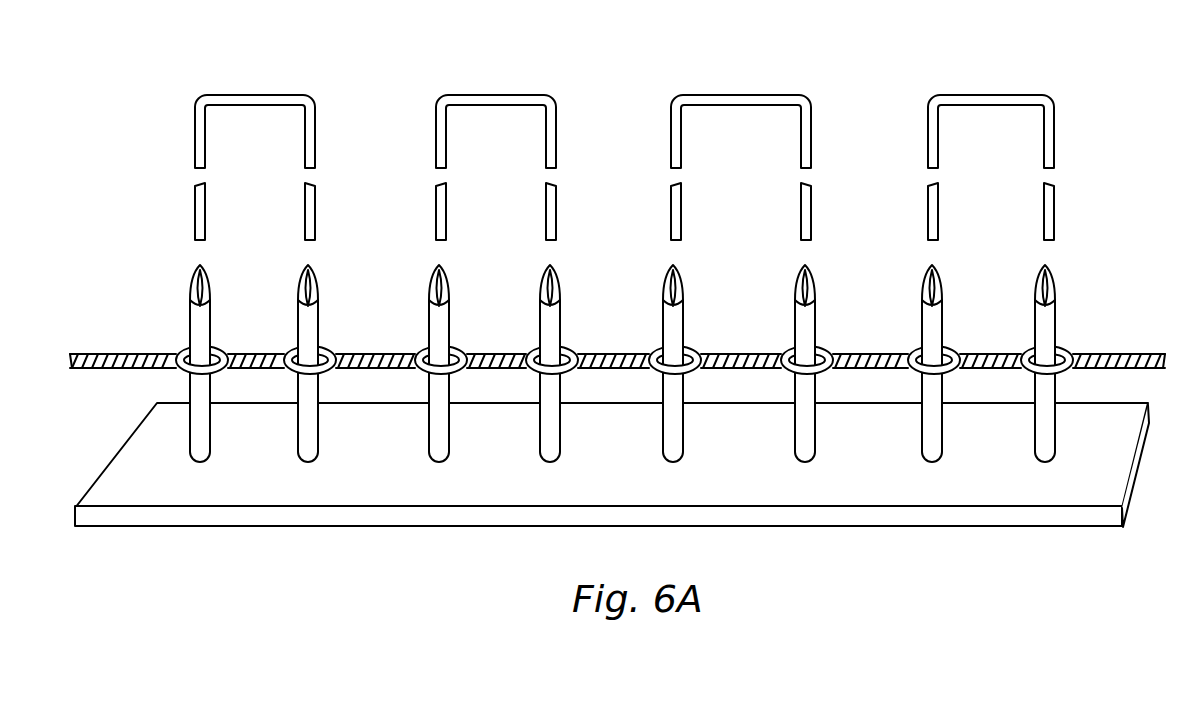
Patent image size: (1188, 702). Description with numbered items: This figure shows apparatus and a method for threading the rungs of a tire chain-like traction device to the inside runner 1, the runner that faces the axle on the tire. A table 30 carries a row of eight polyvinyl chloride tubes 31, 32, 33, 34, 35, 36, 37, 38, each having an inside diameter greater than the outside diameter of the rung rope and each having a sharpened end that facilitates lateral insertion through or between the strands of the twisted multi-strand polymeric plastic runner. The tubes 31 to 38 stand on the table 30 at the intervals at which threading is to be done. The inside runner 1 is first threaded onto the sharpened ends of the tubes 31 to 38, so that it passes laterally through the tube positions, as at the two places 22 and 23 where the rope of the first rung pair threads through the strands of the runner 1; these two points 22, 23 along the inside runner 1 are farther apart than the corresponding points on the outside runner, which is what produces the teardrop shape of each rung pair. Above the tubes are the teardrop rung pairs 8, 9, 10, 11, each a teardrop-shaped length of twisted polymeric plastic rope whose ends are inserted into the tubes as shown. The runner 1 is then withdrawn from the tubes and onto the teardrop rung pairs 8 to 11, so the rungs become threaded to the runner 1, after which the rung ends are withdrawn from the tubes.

The inside runner 1 is at (75, 354).
The teardrop rung pair 8 is at (195, 152).
The teardrop rung pair 9 is at (436, 162).
The teardrop rung pair 10 is at (671, 162).
The teardrop rung pair 11 is at (928, 152).
The threading place on inside runner 22 is at (174, 378).
The threading place on inside runner 23 is at (284, 377).
The table 30 is at (623, 473).
The tube 31 is at (190, 330).
The tube 32 is at (298, 330).
The tube 33 is at (429, 330).
The tube 34 is at (540, 330).
The tube 35 is at (663, 330).
The tube 36 is at (795, 330).
The tube 37 is at (922, 330).
The tube 38 is at (1035, 330).